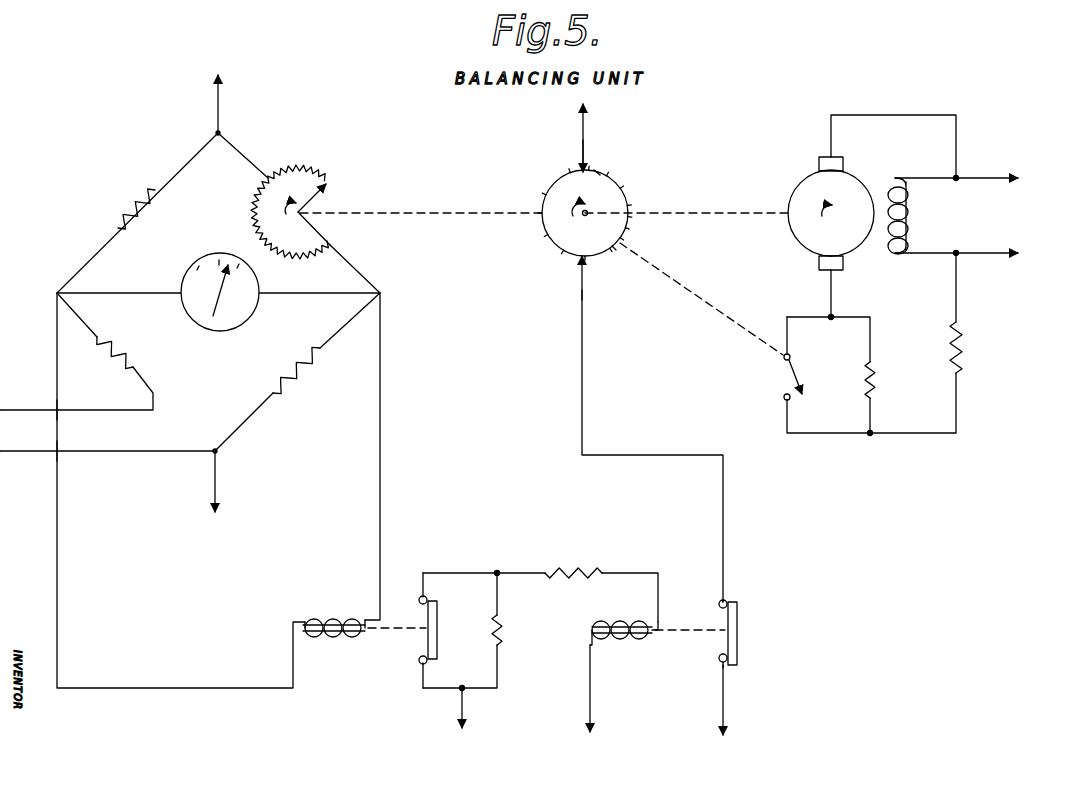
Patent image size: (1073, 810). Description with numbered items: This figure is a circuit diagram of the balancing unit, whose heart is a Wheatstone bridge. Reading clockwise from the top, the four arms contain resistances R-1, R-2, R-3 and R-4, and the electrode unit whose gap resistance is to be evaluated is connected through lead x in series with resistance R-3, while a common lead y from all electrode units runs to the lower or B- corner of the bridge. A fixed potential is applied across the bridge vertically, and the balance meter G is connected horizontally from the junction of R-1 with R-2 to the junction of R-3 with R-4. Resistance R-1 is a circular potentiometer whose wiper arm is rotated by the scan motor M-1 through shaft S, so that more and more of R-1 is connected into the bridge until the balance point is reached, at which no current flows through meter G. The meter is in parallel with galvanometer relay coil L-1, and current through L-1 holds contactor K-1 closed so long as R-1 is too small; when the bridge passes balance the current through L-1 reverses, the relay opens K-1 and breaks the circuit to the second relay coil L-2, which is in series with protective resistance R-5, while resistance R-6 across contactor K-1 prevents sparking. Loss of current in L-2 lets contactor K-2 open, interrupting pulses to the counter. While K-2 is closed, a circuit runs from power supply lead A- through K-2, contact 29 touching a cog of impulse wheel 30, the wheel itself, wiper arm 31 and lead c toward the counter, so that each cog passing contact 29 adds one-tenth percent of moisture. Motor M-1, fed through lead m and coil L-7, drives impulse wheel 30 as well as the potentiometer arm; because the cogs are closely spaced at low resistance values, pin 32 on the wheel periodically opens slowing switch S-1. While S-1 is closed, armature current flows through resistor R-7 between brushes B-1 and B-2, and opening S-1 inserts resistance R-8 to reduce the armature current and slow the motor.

The potentiometer R-1 is at (324, 212).
The bridge resistance R-2 is at (297, 372).
The bridge resistance R-3 is at (105, 351).
The bridge resistance R-4 is at (127, 203).
The protective resistance R-5 is at (577, 582).
The additional resistance R-6 is at (483, 630).
The resistor R-7 is at (937, 343).
The resistance R-8 is at (851, 375).
The balance meter G is at (209, 292).
The power supply lead B- is at (229, 481).
The lead x is at (31, 404).
The common lead y is at (30, 458).
The shaft S is at (544, 228).
The lead c is at (592, 137).
The contact 29 is at (634, 429).
The impulse wheel 30 is at (571, 213).
The wiper arm 31 is at (598, 172).
The pin 32 is at (612, 248).
The scan motor M-1 is at (808, 213).
The brush B-1 is at (887, 146).
The brush B-2 is at (851, 286).
The field coil L-7 is at (916, 216).
The power supply lead A- is at (873, 470).
The lead m is at (969, 255).
The slowing switch S-1 is at (745, 338).
The contactor K-1 is at (432, 630).
The contactor K-2 is at (717, 634).
The galvanometer relay coil L-1 is at (334, 644).
The second relay coil L-2 is at (624, 648).